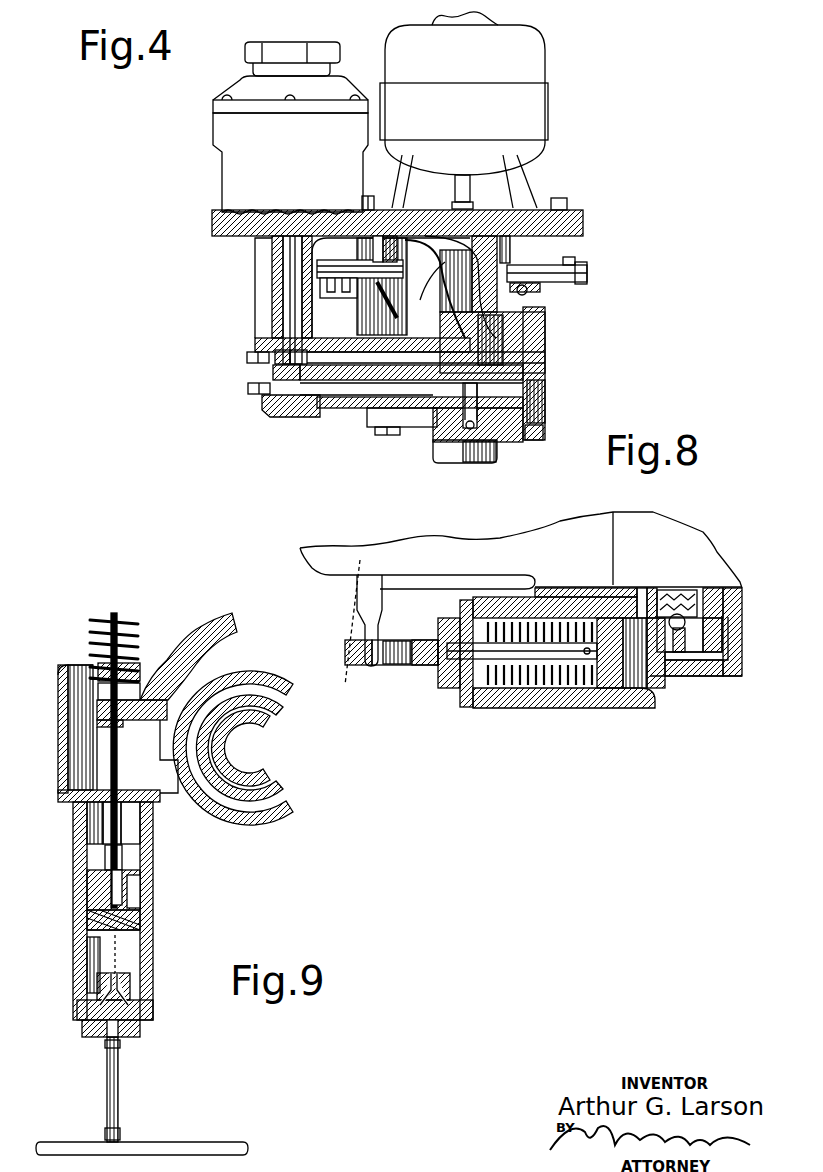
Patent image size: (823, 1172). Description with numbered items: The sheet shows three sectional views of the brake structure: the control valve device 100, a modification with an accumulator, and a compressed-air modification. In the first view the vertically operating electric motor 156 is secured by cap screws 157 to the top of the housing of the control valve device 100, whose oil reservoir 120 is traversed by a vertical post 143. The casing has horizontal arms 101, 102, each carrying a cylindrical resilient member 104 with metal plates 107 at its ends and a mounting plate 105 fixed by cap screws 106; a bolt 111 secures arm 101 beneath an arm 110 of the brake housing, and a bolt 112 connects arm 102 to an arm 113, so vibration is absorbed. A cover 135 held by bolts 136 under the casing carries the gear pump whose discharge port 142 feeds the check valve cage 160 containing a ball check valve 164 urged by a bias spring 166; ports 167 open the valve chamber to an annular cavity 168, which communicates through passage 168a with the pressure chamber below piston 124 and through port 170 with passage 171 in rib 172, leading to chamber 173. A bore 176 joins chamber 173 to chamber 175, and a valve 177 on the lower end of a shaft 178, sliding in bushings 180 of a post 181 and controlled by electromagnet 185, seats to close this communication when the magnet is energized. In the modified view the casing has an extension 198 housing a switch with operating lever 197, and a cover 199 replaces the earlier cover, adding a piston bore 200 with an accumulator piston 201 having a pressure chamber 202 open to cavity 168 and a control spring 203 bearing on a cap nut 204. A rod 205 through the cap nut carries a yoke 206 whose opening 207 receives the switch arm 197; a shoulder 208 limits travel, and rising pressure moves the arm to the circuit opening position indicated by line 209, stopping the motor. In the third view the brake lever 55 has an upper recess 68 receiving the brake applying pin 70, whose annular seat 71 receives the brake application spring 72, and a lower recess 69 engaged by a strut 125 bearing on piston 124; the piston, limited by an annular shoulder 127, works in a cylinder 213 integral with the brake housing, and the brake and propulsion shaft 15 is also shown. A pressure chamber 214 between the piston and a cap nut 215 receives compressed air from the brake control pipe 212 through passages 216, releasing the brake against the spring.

In FIG. 4, the electromagnet 185 is at (220, 116).
In FIG. 4, the electric motor 156 is at (532, 59).
In FIG. 4, the cap screws 157 is at (368, 196).
In FIG. 4, the arm 113 is at (582, 215).
In FIG. 4, the control valve device 100 is at (547, 372).
In FIG. 8, the control valve device 100 is at (612, 541).
In FIG. 4, the bushings 180 is at (272, 250).
In FIG. 4, the post 181 is at (274, 290).
In FIG. 4, the shaft 178 is at (291, 305).
In FIG. 4, the resilient member 104 is at (596, 241).
In FIG. 4, the arm 101 is at (330, 268).
In FIG. 4, the bolt 111 is at (326, 294).
In FIG. 4, the piston 124 is at (400, 361).
In FIG. 9, the piston 124 is at (152, 905).
In FIG. 4, the passage 171 is at (345, 410).
In FIG. 4, the chamber 173 is at (290, 418).
In FIG. 4, the chamber 175 is at (262, 373).
In FIG. 4, the valve 177 is at (246, 357).
In FIG. 4, the bore 176 is at (258, 398).
In FIG. 4, the rib 172 is at (370, 415).
In FIG. 4, the mounting plate 105 is at (588, 276).
In FIG. 4, the cap screws 106 is at (576, 262).
In FIG. 4, the arm 102 is at (570, 283).
In FIG. 4, the metal plate 107 is at (562, 240).
In FIG. 4, the bolt 112 is at (545, 285).
In FIG. 4, the arm 110 is at (398, 236).
In FIG. 4, the post 143 is at (478, 234).
In FIG. 4, the reservoir 120 is at (522, 234).
In FIG. 8, the reservoir 120 is at (625, 604).
In FIG. 4, the bolts 136 is at (390, 436).
In FIG. 4, the port 170 is at (452, 442).
In FIG. 4, the cover 135 is at (508, 432).
In FIG. 8, the extension 198 is at (397, 550).
In FIG. 8, the operating lever 197 is at (369, 598).
In FIG. 8, the line 209 is at (352, 630).
In FIG. 8, the yoke 206 is at (358, 668).
In FIG. 8, the opening 207 is at (396, 668).
In FIG. 8, the shoulder 208 is at (440, 670).
In FIG. 8, the cap nut 204 is at (465, 692).
In FIG. 8, the piston bore 200 is at (563, 710).
In FIG. 8, the control spring 203 is at (515, 700).
In FIG. 8, the rod 205 is at (580, 700).
In FIG. 8, the pressure chamber 202 is at (640, 690).
In FIG. 8, the accumulator piston 201 is at (614, 712).
In FIG. 8, the ball check valve 164 is at (660, 690).
In FIG. 8, the discharge port 142 is at (690, 665).
In FIG. 8, the annular cavity 168 is at (716, 592).
In FIG. 8, the passage 168a is at (728, 630).
In FIG. 8, the check valve cage 160 is at (690, 597).
In FIG. 8, the bias spring 166 is at (672, 600).
In FIG. 8, the ports 167 is at (652, 600).
In FIG. 8, the cover 199 is at (733, 678).
In FIG. 9, the brake applying pin 70 is at (110, 688).
In FIG. 9, the brake application spring 72 is at (88, 631).
In FIG. 9, the recess 68 is at (105, 702).
In FIG. 9, the annular seat 71 is at (60, 660).
In FIG. 9, the recess 69 is at (120, 720).
In FIG. 9, the brake lever 55 is at (188, 633).
In FIG. 9, the brake and propulsion shaft 15 is at (250, 772).
In FIG. 9, the cylinder 213 is at (73, 929).
In FIG. 9, the annular shoulder 127 is at (138, 843).
In FIG. 9, the strut 125 is at (112, 860).
In FIG. 9, the pressure chamber 214 is at (88, 963).
In FIG. 9, the passages 216 is at (143, 1028).
In FIG. 9, the cap nut 215 is at (82, 1037).
In FIG. 9, the brake control pipe 212 is at (180, 1148).